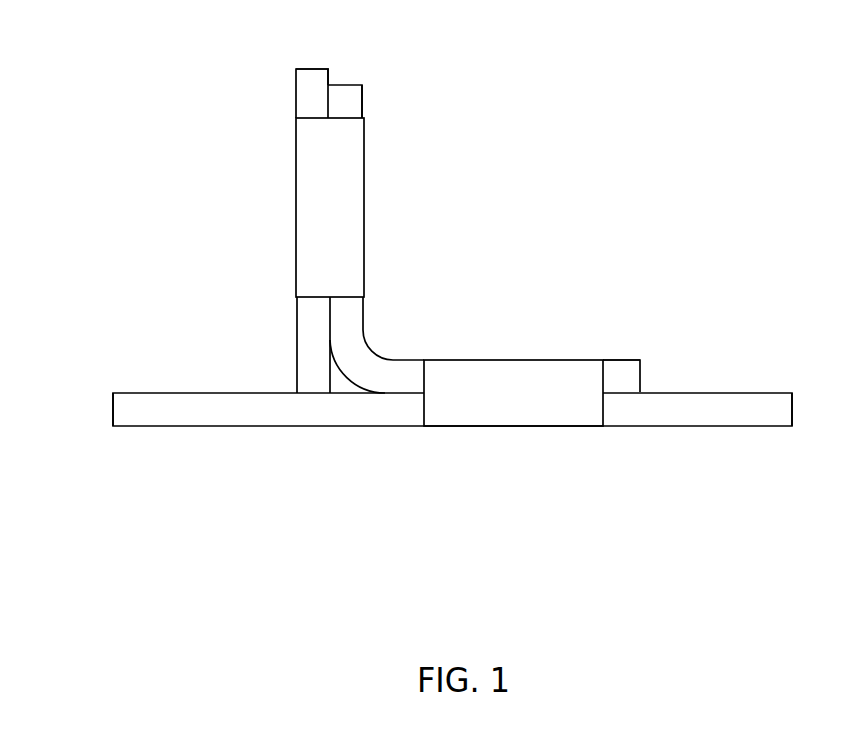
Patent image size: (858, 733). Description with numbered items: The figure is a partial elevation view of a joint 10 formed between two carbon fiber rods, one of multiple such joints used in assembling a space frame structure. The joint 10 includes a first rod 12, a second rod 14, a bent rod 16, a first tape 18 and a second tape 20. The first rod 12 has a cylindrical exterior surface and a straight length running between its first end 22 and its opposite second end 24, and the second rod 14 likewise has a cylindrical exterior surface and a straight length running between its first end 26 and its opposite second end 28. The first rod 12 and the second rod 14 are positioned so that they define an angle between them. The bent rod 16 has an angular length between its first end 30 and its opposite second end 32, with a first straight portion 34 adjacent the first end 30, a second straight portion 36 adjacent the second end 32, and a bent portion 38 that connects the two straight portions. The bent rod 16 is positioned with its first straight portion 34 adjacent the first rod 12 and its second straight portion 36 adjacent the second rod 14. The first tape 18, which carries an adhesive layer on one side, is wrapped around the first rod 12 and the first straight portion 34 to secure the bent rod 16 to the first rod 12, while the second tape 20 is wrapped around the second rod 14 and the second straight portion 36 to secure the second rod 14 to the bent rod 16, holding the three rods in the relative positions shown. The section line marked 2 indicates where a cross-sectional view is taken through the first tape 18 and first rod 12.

The joint 10 is at (427, 297).
The first rod 12 is at (675, 427).
The second rod 14 is at (296, 92).
The bent rod 16 is at (367, 333).
The first tape 18 is at (493, 426).
The second tape 20 is at (296, 215).
The first end of the first rod 22 is at (792, 426).
The second end of the first rod 24 is at (113, 426).
The first end of the second rod 26 is at (297, 69).
The second end of the second rod 28 is at (297, 390).
The first end of the bent rod 30 is at (638, 360).
The second end of the bent rod 32 is at (362, 85).
The first straight portion 34 is at (612, 360).
The second straight portion 36 is at (362, 100).
The bent portion 38 is at (373, 348).
The section line 2- 2 is at (575, 467).